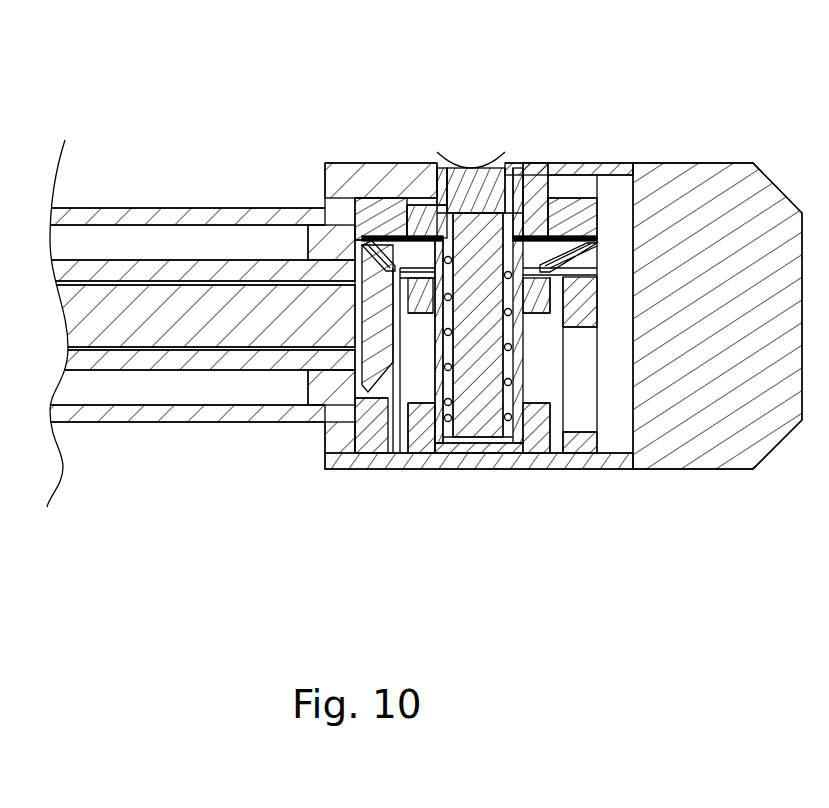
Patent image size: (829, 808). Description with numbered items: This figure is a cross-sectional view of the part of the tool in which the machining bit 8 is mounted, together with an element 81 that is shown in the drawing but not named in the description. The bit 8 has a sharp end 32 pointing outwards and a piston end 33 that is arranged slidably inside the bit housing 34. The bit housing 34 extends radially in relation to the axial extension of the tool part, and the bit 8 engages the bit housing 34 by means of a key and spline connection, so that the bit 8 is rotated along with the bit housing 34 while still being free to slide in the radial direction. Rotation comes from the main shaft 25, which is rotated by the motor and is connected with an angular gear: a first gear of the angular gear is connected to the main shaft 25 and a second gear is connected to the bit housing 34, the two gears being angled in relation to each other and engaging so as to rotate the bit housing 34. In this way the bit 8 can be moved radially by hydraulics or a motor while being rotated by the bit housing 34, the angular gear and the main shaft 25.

The machining bit 8 is at (490, 177).
The main shaft 25 is at (168, 323).
The sharp end 32 is at (440, 162).
The piston end 33 is at (490, 427).
The bit housing 34 is at (512, 347).
The bushing 81 is at (545, 177).